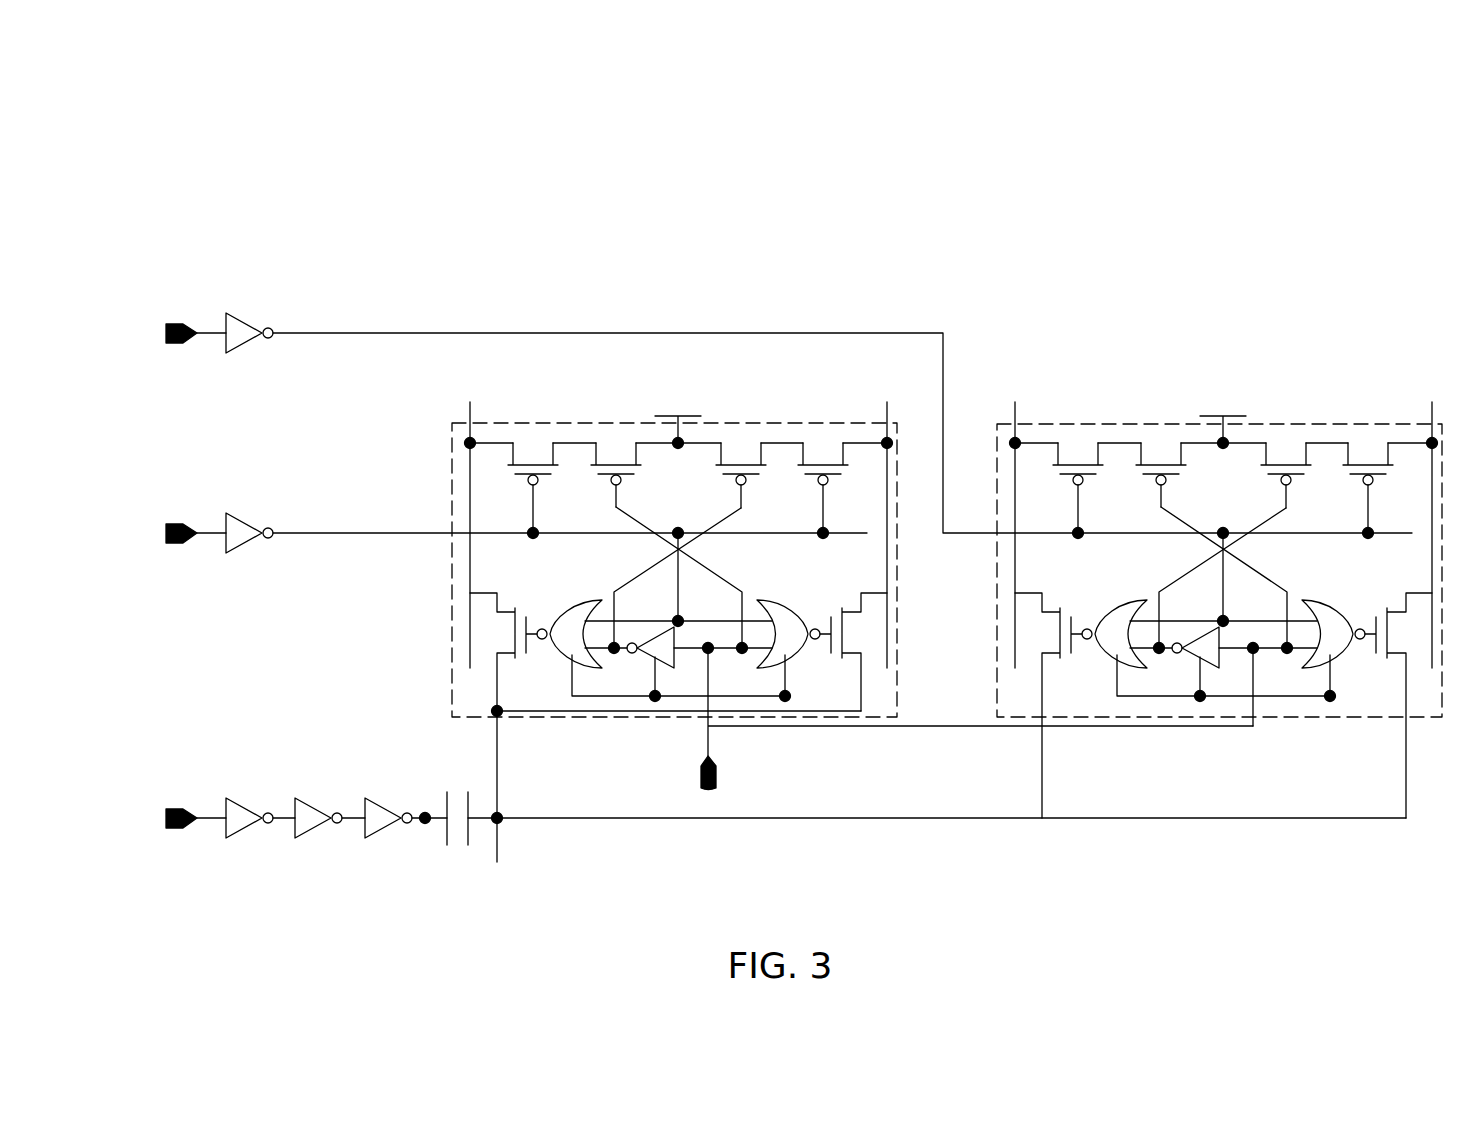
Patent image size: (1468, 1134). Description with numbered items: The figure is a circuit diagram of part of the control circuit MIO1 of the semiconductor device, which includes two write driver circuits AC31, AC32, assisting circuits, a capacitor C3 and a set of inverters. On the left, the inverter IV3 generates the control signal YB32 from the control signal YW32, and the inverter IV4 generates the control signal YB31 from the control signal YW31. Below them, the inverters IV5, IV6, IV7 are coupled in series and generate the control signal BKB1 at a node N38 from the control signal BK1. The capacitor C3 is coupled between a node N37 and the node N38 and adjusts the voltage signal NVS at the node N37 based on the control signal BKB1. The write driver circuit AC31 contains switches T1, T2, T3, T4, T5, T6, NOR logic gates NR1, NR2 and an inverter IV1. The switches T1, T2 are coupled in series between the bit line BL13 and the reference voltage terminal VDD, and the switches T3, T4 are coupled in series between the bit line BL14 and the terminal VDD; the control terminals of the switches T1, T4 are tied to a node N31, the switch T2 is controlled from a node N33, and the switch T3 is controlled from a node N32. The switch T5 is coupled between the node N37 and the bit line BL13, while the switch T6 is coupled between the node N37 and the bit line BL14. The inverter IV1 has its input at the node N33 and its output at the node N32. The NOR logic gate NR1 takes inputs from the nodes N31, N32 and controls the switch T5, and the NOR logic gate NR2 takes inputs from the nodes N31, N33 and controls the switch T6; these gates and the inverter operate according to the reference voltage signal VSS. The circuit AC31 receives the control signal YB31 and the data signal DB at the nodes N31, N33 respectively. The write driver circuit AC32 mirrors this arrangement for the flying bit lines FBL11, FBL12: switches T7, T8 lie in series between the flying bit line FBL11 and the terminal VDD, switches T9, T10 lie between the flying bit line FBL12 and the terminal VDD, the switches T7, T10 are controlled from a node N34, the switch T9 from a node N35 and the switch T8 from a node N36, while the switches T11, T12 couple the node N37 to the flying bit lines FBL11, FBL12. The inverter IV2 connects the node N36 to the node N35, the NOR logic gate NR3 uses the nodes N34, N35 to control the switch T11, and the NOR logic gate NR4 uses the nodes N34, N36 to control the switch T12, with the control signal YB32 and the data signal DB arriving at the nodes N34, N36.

The control circuit MIO1 is at (195, 203).
The control signal YW32 is at (157, 334).
The control signal YW31 is at (157, 534).
The inverter IV3 is at (244, 313).
The inverter IV4 is at (244, 513).
The control signal YB32 is at (330, 333).
The control signal YB31 is at (330, 533).
The control signal BK1 is at (167, 819).
The inverter IV5 is at (244, 800).
The inverter IV6 is at (311, 803).
The inverter IV7 is at (384, 804).
The control signal BKB1 is at (438, 818).
The node N38 is at (425, 823).
The capacitor C3 is at (457, 833).
The node N37 is at (497, 823).
The voltage signal NVS is at (620, 818).
The write driver circuit AC31 is at (575, 423).
The write driver circuit AC32 is at (1120, 424).
The bit line BL13 is at (468, 520).
The bit line BL14 is at (879, 520).
The flying bit line FBL11 is at (1015, 520).
The flying bit line FBL12 is at (1415, 520).
The reference voltage terminal VDD is at (951, 420).
The reference voltage signal VSS is at (790, 696).
The switch T1 is at (533, 486).
The switch T2 is at (616, 470).
The switch T3 is at (741, 471).
The switch T4 is at (823, 486).
The switch T5 is at (508, 652).
The switch T6 is at (848, 652).
The switch T7 is at (1078, 486).
The switch T8 is at (1161, 470).
The switch T9 is at (1286, 471).
The switch T10 is at (1368, 486).
The switch T11 is at (1053, 705).
The switch T12 is at (1393, 705).
The node N31 is at (678, 564).
The node N32 is at (614, 653).
The node N33 is at (742, 653).
The node N34 is at (1223, 564).
The node N35 is at (1159, 653).
The node N36 is at (1287, 653).
The NOR logic gate NR1 is at (573, 608).
The NOR logic gate NR2 is at (789, 608).
The NOR logic gate NR3 is at (1118, 608).
The NOR logic gate NR4 is at (1334, 608).
The inverter IV1 is at (650, 640).
The inverter IV2 is at (1195, 640).
The data signal DB is at (975, 729).